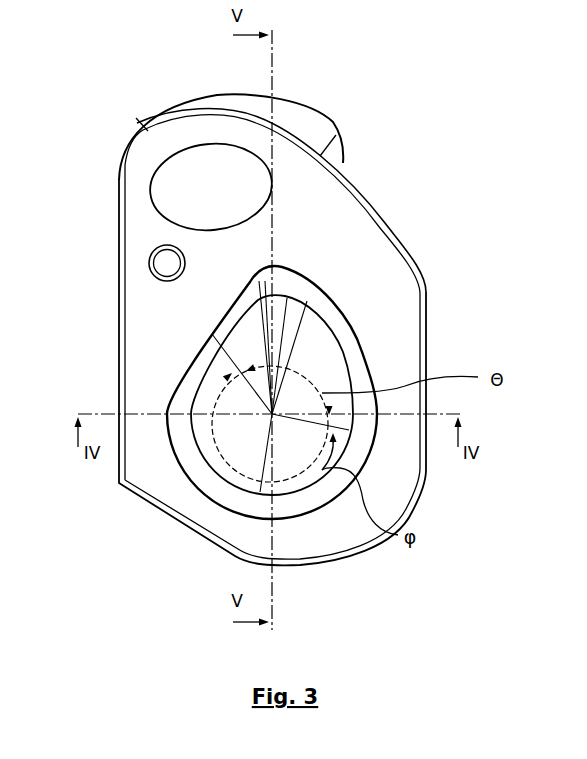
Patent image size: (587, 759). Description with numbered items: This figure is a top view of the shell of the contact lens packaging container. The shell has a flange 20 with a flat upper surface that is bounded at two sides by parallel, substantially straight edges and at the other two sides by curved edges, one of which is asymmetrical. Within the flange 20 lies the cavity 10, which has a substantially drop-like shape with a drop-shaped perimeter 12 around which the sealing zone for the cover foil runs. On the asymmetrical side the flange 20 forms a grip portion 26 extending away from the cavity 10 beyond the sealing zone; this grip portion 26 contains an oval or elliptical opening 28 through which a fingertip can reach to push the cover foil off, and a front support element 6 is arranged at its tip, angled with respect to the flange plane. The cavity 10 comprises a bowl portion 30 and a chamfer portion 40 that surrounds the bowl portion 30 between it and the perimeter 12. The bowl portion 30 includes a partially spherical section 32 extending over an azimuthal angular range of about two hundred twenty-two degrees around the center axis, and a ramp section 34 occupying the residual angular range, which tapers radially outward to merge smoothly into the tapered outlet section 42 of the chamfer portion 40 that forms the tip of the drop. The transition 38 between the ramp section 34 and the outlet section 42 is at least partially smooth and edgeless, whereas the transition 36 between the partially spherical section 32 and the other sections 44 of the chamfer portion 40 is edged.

The front support element 6 is at (302, 130).
The cavity 10 is at (241, 520).
The drop-shaped perimeter 12 is at (370, 363).
The flange 20 is at (298, 542).
The grip portion 26 is at (290, 202).
The opening 28 is at (208, 163).
The bowl portion 30 is at (297, 499).
The partially spherical section 32 is at (240, 515).
The ramp section 34 is at (362, 338).
The transition 36 is at (175, 441).
The transition 38 is at (266, 300).
The chamfer portion 40 is at (180, 373).
The tapered outlet section 42 is at (315, 285).
The other section of the chamfer portion 44 is at (366, 448).